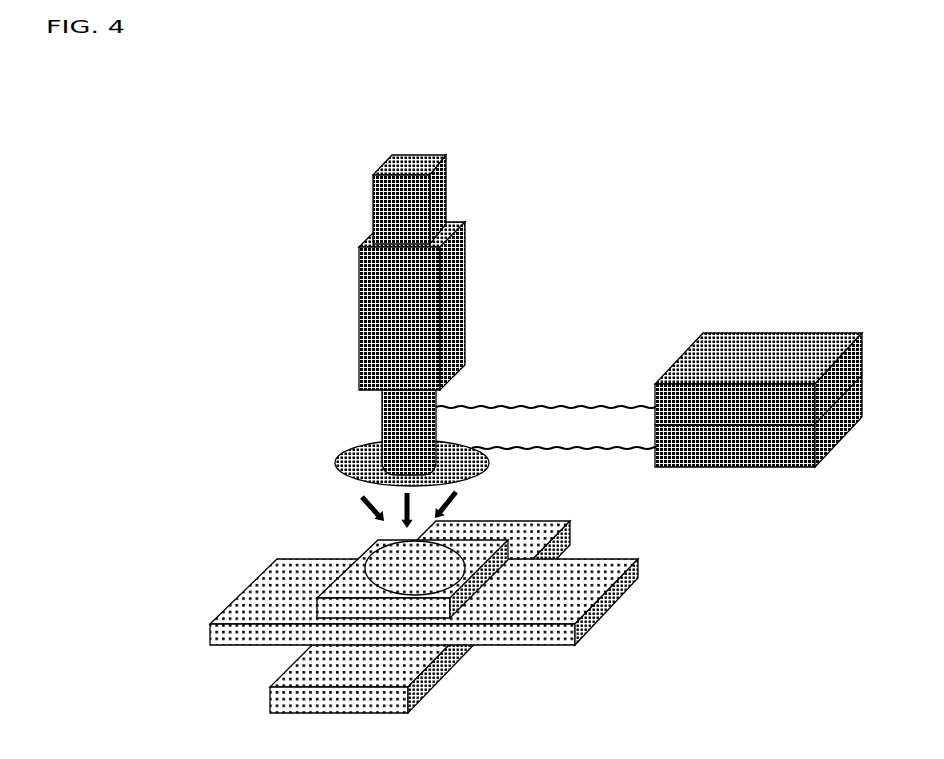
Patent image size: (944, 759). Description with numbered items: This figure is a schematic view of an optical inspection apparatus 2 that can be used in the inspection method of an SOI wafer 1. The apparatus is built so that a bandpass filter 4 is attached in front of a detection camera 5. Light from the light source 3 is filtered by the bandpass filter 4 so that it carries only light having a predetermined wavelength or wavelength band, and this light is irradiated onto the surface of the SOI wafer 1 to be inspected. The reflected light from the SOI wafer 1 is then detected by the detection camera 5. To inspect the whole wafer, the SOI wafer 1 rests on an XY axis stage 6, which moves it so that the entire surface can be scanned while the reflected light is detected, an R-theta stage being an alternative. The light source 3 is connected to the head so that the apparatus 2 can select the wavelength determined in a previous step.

The SOI wafer 1 is at (380, 572).
The optical inspection apparatus 2 is at (300, 247).
The light source 3 is at (765, 348).
The bandpass filter 4 is at (363, 463).
The detection camera 5 is at (400, 427).
The XY axis stage 6 is at (643, 643).